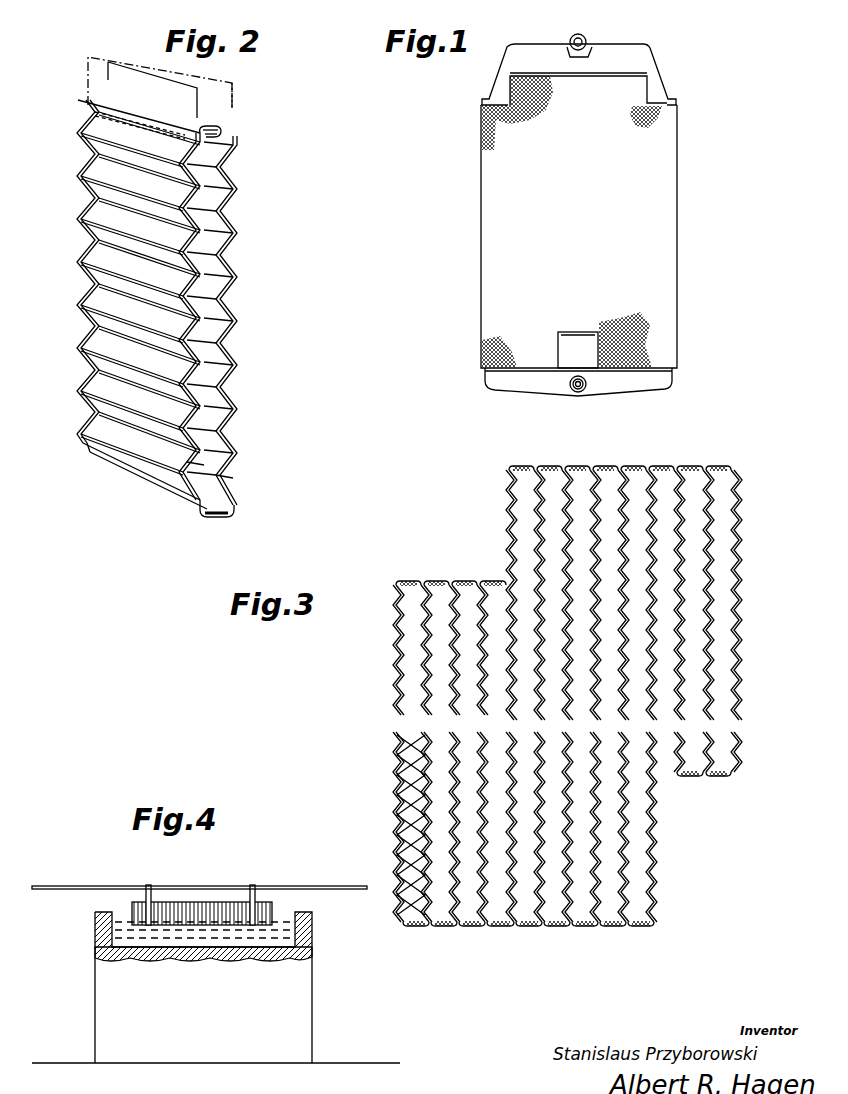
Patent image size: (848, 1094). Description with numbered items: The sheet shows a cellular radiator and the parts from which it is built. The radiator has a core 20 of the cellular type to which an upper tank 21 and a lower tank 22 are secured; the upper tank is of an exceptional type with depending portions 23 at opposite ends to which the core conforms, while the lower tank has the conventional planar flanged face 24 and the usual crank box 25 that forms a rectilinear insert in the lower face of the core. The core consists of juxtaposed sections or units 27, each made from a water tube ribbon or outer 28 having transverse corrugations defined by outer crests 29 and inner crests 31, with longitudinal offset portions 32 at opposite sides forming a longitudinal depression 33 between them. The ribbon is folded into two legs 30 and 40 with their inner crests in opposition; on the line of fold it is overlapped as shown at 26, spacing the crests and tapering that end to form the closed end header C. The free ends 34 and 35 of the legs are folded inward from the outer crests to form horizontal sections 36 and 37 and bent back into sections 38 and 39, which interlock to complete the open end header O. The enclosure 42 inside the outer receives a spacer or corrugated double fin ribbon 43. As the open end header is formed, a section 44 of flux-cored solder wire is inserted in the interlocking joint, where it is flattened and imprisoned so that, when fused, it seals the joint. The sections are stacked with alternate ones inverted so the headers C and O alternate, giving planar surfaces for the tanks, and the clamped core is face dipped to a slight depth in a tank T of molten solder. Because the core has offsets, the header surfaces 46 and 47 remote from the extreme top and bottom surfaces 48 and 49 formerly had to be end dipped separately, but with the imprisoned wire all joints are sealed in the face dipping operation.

In FIG. 1, the core 20 is at (579, 236).
In FIG. 4, the core 20 is at (196, 905).
In FIG. 1, the upper tank 21 is at (579, 69).
In FIG. 1, the lower tank 22 is at (578, 382).
In FIG. 1, the depending portions 23 is at (492, 96).
In FIG. 1, the planar flanged face 24 is at (522, 386).
In FIG. 1, the crank box 25 is at (578, 350).
In FIG. 2, the overlap 26 is at (214, 520).
In FIG. 3, the sections or units 27 is at (633, 930).
In FIG. 2, the water tube ribbon or outer 28 is at (240, 505).
In FIG. 2, the outer crests 29 is at (152, 478).
In FIG. 3, the outer crests 29 is at (393, 600).
In FIG. 2, the leg 30 is at (240, 213).
In FIG. 2, the inner crests 31 is at (212, 300).
In FIG. 3, the inner crests 31 is at (410, 630).
In FIG. 2, the longitudinal offset portions 32 is at (80, 437).
In FIG. 2, the longitudinal depression 33 is at (122, 470).
In FIG. 2, the free end 34 is at (233, 83).
In FIG. 2, the free end 35 is at (88, 57).
In FIG. 2, the horizontal section 36 is at (225, 142).
In FIG. 2, the horizontal section 37 is at (210, 128).
In FIG. 2, the bent-back section 38 is at (216, 133).
In FIG. 2, the bent-back section 39 is at (222, 137).
In FIG. 2, the leg 40 is at (205, 239).
In FIG. 2, the enclosure 42 is at (207, 462).
In FIG. 3, the spacer or corrugated double fin ribbon 43 is at (400, 845).
In FIG. 2, the section of solder wire 44 is at (95, 115).
In FIG. 1, the header surface 46 is at (487, 107).
In FIG. 3, the header surface 46 is at (392, 581).
In FIG. 1, the header surface 47 is at (580, 332).
In FIG. 3, the header surface 47 is at (700, 780).
In FIG. 1, the extreme top surface 48 is at (618, 72).
In FIG. 3, the extreme top surface 48 is at (636, 467).
In FIG. 1, the extreme bottom surface 49 is at (498, 385).
In FIG. 3, the extreme bottom surface 49 is at (528, 930).
In FIG. 2, the closed end header C is at (222, 524).
In FIG. 3, the closed end header C is at (408, 566).
In FIG. 2, the open end header O is at (92, 113).
In FIG. 3, the open end header O is at (436, 581).
In FIG. 4, the tank of molten solder T is at (216, 987).